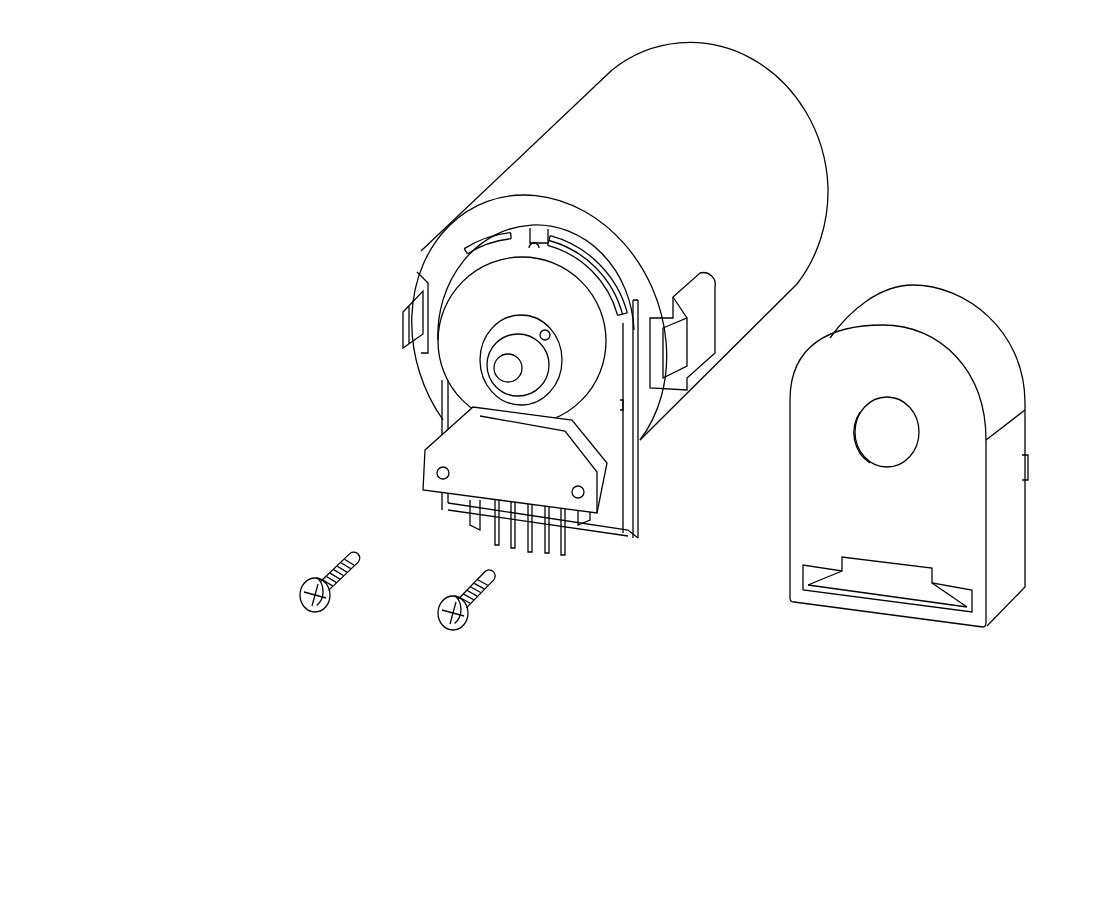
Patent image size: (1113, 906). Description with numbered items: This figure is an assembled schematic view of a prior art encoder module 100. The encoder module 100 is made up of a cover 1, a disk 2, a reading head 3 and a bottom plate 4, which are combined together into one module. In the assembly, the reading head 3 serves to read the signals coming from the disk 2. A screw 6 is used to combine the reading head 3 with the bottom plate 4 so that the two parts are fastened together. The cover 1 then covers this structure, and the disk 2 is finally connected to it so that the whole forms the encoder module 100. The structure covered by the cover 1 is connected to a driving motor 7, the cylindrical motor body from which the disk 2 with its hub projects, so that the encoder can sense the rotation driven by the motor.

The encoder module 100 is at (298, 197).
The driving motor 7 is at (773, 140).
The disk 2 is at (483, 300).
The reading head 3 is at (472, 440).
The bottom plate 4 is at (632, 477).
The screw 6 is at (490, 590).
The cover 1 is at (980, 348).